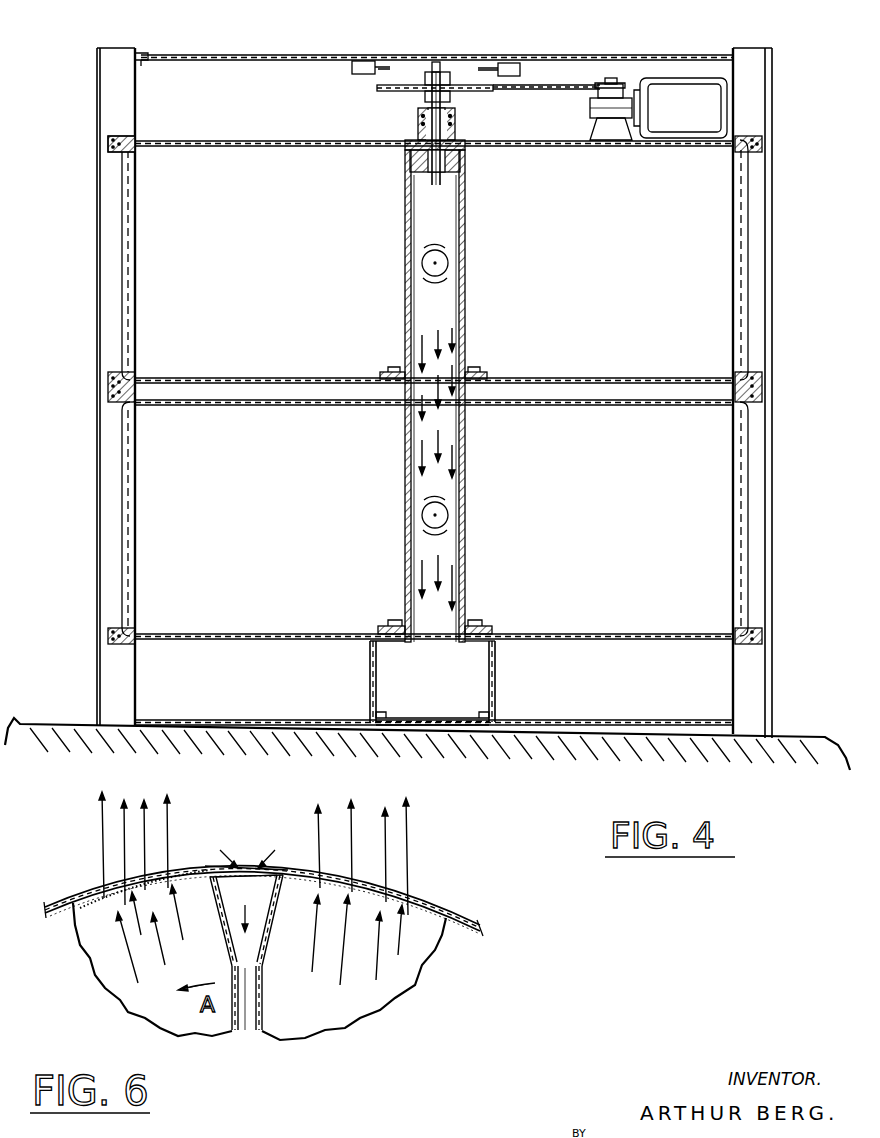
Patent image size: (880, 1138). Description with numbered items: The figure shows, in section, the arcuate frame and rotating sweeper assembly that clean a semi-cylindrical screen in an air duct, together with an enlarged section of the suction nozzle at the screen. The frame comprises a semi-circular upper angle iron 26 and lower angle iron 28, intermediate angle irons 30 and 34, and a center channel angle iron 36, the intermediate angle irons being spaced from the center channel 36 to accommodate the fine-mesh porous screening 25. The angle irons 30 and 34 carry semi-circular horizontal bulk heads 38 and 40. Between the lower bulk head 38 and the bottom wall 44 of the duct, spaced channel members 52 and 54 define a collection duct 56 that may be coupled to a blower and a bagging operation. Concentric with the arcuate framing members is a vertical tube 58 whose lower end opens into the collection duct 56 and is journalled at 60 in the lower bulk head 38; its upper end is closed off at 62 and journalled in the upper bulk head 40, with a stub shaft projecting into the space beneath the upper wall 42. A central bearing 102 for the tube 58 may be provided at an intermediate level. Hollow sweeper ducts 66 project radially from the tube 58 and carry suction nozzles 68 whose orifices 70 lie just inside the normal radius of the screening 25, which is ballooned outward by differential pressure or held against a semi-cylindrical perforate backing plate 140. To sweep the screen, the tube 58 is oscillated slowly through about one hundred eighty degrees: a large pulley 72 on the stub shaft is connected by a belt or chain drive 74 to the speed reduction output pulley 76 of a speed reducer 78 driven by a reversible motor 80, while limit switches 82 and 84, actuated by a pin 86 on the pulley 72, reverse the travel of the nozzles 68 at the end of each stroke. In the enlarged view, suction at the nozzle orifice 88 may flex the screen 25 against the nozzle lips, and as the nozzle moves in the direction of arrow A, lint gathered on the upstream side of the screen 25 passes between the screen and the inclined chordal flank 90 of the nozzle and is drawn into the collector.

In FIG. 4, the upper angle iron 26 is at (143, 57).
In FIG. 4, the upper wall 42 is at (264, 60).
In FIG. 4, the limit switch 82 is at (358, 60).
In FIG. 4, the pin 86 is at (438, 62).
In FIG. 4, the limit switch 84 is at (488, 62).
In FIG. 4, the belt or chain drive 74 is at (557, 86).
In FIG. 4, the speed reduction output pulley 76 is at (622, 82).
In FIG. 4, the reversible motor 80 is at (700, 115).
In FIG. 4, the large pulley 72 is at (398, 92).
In FIG. 4, the speed reducer 78 is at (590, 110).
In FIG. 4, the upper bulk head 40 is at (682, 147).
In FIG. 4, the closed upper end 62 is at (466, 166).
In FIG. 4, the intermediate angle iron 34 is at (140, 146).
In FIG. 4, the channel angle iron 36 is at (150, 380).
In FIG. 4, the intermediate angle iron 30 is at (138, 632).
In FIG. 4, the central bearing 102 is at (480, 370).
In FIG. 4, the vertical tube 58 is at (466, 456).
In FIG. 4, the sweeper duct 66 is at (448, 513).
In FIG. 6, the sweeper duct 66 is at (262, 992).
In FIG. 4, the journal 60 is at (476, 630).
In FIG. 4, the lower bulk head 38 is at (584, 637).
In FIG. 4, the channel member 52 is at (370, 668).
In FIG. 4, the channel member 54 is at (496, 668).
In FIG. 4, the collection duct 56 is at (447, 704).
In FIG. 4, the lower angle iron 28 is at (138, 720).
In FIG. 4, the bottom wall 44 is at (612, 742).
In FIG. 6, the screening 25 is at (420, 906).
In FIG. 6, the perforate backing plate 140 is at (472, 918).
In FIG. 6, the nozzle orifice 70 is at (249, 866).
In FIG. 6, the orifice 88 is at (278, 884).
In FIG. 6, the suction nozzle 68 is at (272, 922).
In FIG. 6, the inclined chordal flank 90 is at (184, 942).